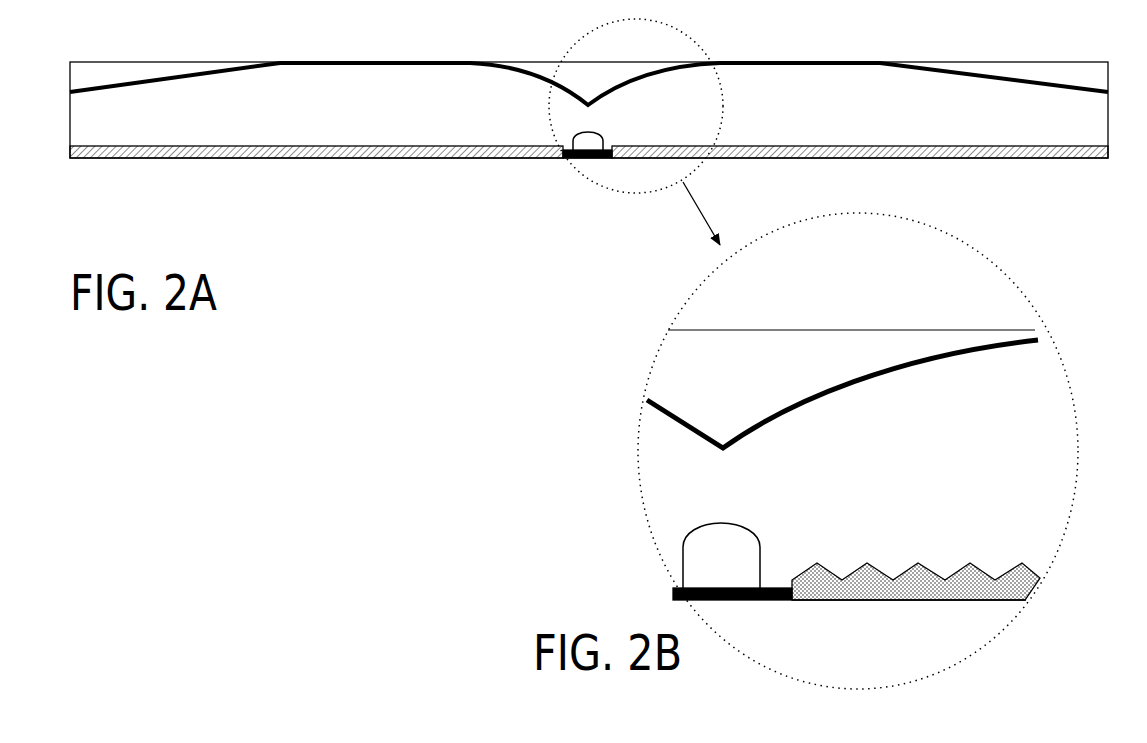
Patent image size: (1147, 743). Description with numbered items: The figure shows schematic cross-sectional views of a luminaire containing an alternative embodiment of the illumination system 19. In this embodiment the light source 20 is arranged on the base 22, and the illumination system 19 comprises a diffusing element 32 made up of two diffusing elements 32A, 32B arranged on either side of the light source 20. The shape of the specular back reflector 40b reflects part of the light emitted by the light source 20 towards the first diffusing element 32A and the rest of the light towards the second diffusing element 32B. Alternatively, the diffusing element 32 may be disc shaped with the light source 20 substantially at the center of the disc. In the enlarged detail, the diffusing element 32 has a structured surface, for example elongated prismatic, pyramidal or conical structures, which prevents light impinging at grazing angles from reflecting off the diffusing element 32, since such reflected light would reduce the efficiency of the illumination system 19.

In FIG. 2A, the illumination system 19 is at (472, 233).
In FIG. 2A, the light source 20 is at (612, 130).
In FIG. 2B, the light source 20 is at (753, 522).
In FIG. 2A, the base 22 is at (602, 158).
In FIG. 2B, the base 22 is at (747, 600).
In FIG. 2B, the diffusing element 32 is at (930, 588).
In FIG. 2A, the first diffusing element 32A is at (1080, 147).
In FIG. 2A, the second diffusing element 32B is at (253, 157).
In FIG. 2A, the specular back reflector 40b is at (943, 78).
In FIG. 2B, the specular back reflector 40b is at (952, 353).